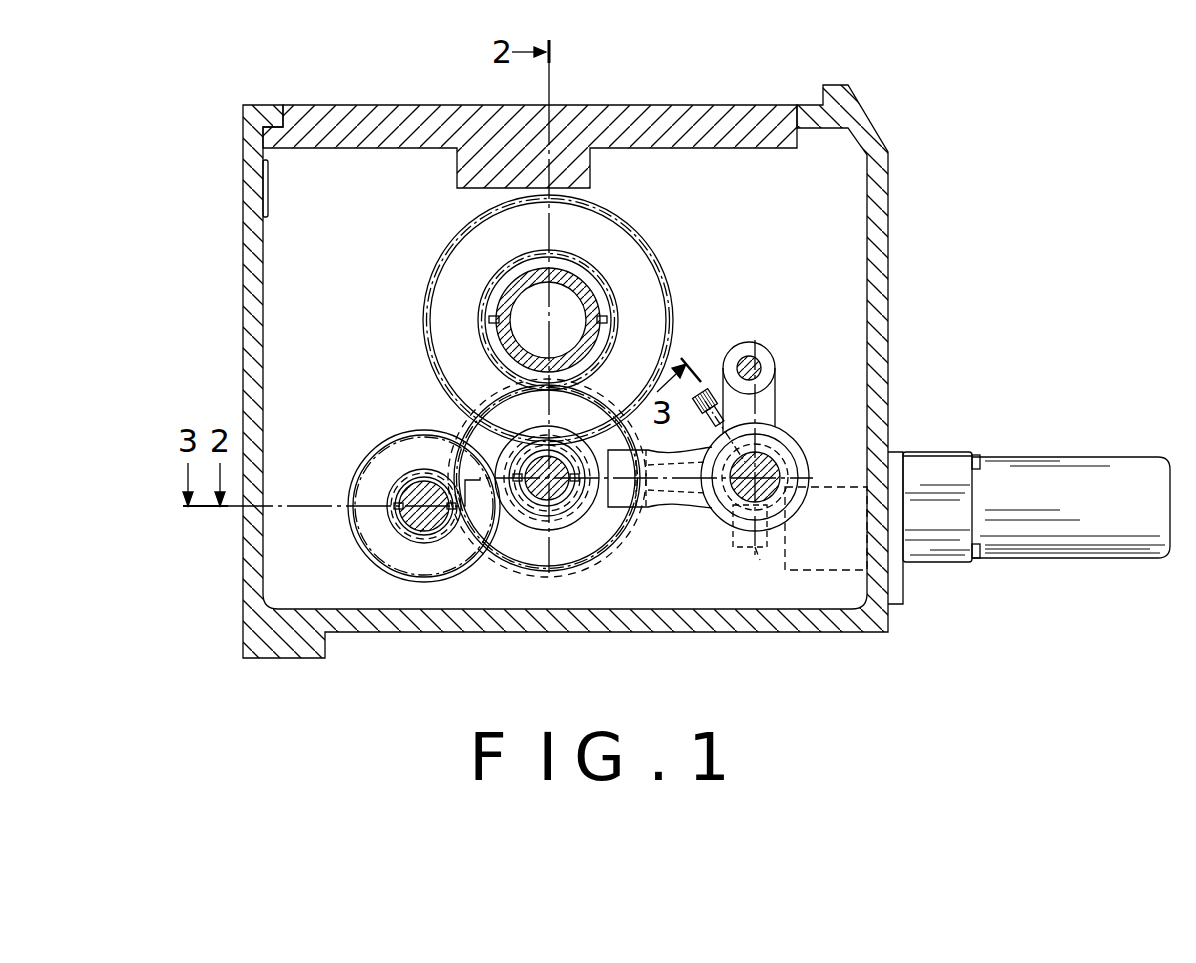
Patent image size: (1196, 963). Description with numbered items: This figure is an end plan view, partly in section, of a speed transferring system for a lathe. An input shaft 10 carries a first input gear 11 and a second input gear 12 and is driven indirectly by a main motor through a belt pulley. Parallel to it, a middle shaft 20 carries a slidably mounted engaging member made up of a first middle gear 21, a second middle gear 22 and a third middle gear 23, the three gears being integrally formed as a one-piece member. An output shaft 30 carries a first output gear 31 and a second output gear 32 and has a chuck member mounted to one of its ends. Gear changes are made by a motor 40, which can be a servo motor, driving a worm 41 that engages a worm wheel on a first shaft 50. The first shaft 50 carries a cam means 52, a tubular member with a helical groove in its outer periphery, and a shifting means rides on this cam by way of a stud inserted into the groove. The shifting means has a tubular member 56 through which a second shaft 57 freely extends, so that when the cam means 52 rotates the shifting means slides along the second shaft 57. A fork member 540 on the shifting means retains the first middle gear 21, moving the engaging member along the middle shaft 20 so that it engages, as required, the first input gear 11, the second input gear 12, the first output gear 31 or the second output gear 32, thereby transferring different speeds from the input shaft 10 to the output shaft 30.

The input shaft 10 is at (415, 490).
The first input gear 11 is at (353, 537).
The second input gear 12 is at (420, 535).
The middle shaft 20 is at (572, 495).
The first middle gear 21 is at (505, 565).
The second middle gear 22 is at (560, 497).
The third middle gear 23 is at (578, 493).
The output shaft 30 is at (563, 270).
The first output gear 31 is at (430, 282).
The second output gear 32 is at (503, 273).
The motor 40 is at (1013, 472).
The worm 41 is at (757, 550).
The first shaft 50 is at (777, 467).
The cam means 52 is at (760, 440).
The tubular member 56 is at (768, 357).
The second shaft 57 is at (748, 358).
The fork member 540 is at (620, 458).